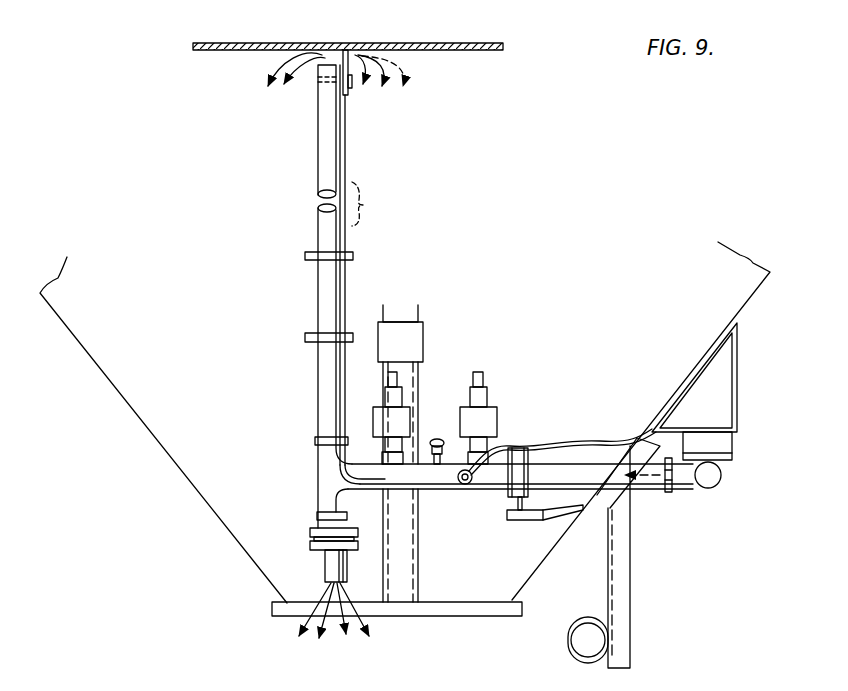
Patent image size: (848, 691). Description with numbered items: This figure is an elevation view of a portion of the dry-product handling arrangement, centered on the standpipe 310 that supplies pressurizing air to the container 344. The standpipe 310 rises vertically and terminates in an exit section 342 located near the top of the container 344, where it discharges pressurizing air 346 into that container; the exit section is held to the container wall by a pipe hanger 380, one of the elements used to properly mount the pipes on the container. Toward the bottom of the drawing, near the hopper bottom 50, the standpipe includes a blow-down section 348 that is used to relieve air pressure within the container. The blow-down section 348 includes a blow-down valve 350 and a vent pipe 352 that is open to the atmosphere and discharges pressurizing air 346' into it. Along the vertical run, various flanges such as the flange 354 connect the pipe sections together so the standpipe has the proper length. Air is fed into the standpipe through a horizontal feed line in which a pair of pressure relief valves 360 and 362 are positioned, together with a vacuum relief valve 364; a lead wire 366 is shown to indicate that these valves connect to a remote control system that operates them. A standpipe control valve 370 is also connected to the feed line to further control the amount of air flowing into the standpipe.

The hopper bottom 50 is at (437, 620).
The standpipe 310 is at (304, 234).
The exit section 342 is at (300, 98).
The container 344 is at (447, 51).
The pressurizing air 346 is at (350, 85).
The pressurizing air 346' is at (334, 637).
The blow-down section 348 is at (288, 556).
The blow-down valve 350 is at (310, 540).
The vent pipe 352 is at (323, 568).
The flange 354 is at (305, 337).
The pressure relief valve 360 is at (402, 422).
The pressure relief valve 362 is at (488, 413).
The vacuum relief valve 364 is at (441, 450).
The lead wire 366 is at (542, 438).
The standpipe control valve 370 is at (527, 516).
The pipe hanger 380 is at (348, 52).